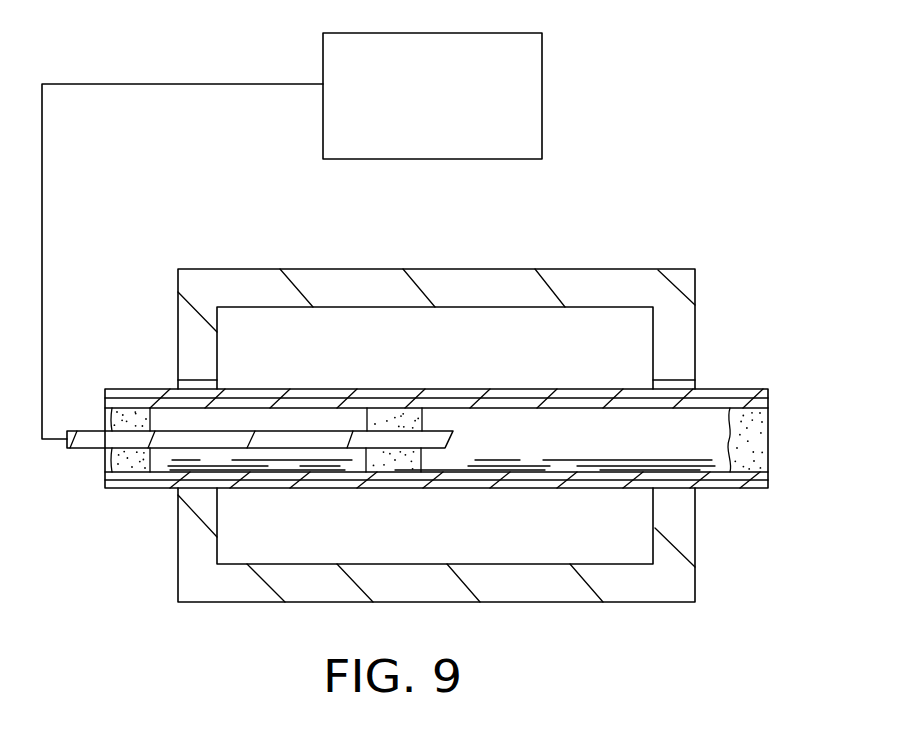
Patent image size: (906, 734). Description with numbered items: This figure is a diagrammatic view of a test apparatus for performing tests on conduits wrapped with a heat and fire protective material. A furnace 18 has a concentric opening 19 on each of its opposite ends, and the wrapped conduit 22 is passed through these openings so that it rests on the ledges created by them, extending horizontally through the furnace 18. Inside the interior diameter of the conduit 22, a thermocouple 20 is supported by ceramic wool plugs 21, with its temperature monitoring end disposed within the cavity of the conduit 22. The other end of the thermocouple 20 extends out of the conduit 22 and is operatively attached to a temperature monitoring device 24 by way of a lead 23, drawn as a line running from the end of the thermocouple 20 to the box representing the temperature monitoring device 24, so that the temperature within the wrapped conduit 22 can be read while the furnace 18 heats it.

The furnace 18 is at (695, 555).
The concentric opening 19 is at (685, 387).
The thermocouple 20 is at (456, 433).
The ceramic wool plug 21 is at (762, 448).
The conduit 22 is at (155, 367).
The thermocouple 23 is at (42, 255).
The temperature monitoring device 24 is at (542, 115).